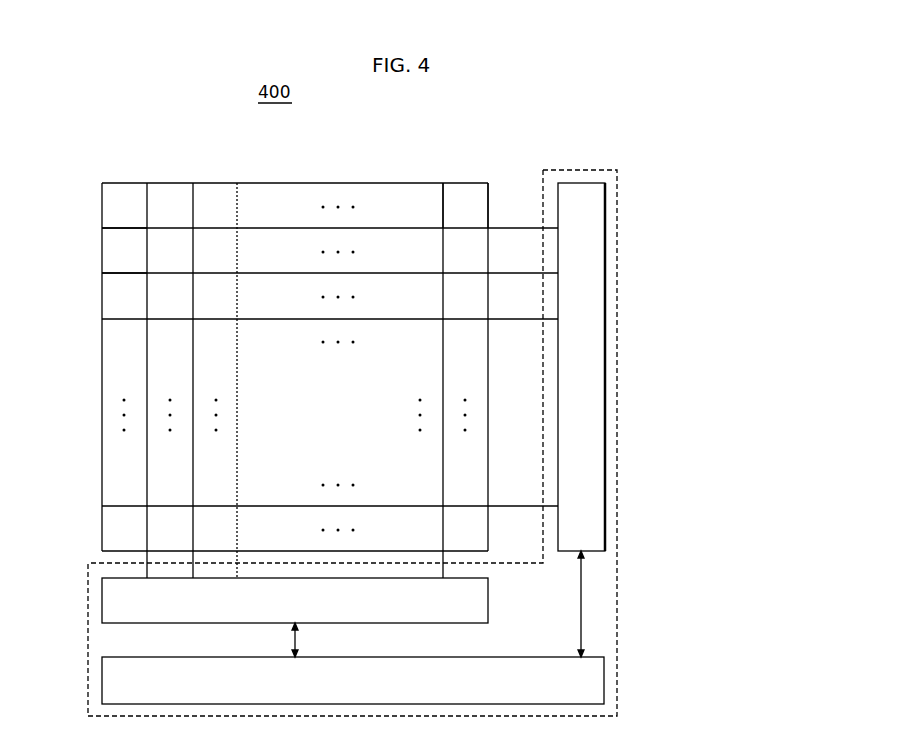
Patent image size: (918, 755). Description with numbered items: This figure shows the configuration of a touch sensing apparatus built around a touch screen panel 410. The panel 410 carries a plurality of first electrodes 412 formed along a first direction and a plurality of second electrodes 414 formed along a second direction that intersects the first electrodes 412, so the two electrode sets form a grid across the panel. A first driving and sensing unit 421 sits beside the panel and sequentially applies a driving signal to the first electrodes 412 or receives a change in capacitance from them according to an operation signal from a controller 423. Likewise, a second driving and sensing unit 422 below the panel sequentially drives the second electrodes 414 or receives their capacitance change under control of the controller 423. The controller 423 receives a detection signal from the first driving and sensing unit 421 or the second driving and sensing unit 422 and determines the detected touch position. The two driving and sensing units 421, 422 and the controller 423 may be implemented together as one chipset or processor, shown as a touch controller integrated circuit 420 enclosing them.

The touch screen panel 410 is at (66, 163).
The first electrodes 412 is at (463, 225).
The second electrodes 414 is at (147, 249).
The touch controller integrated circuit 420 is at (619, 192).
The first driving and sensing unit 421 is at (606, 303).
The second driving and sensing unit 422 is at (100, 600).
The controller 423 is at (606, 678).